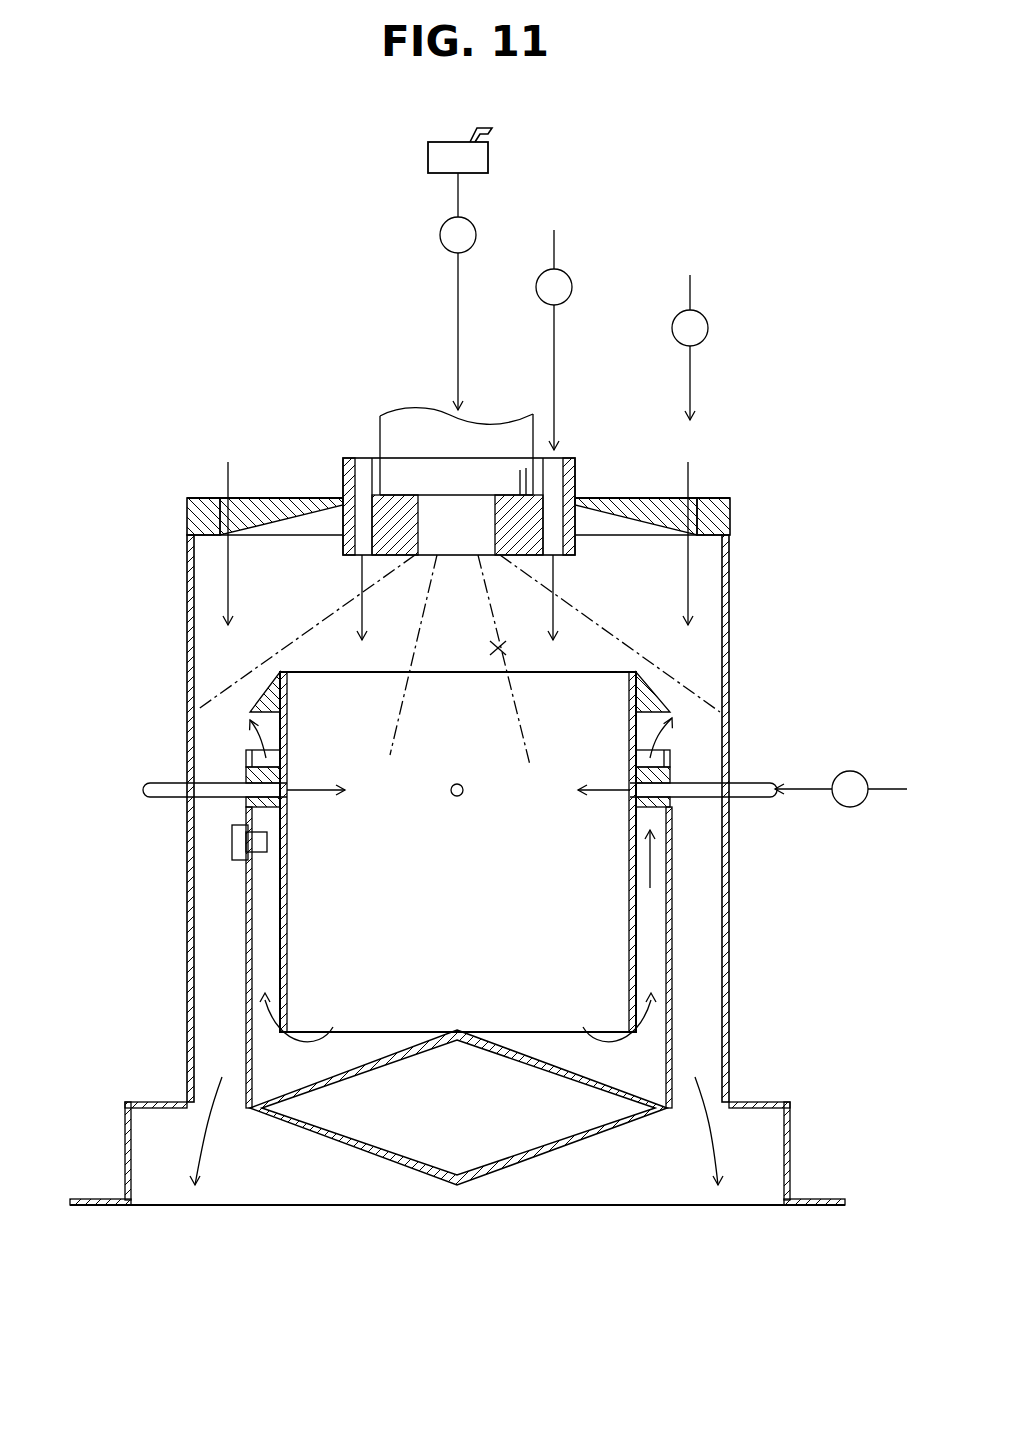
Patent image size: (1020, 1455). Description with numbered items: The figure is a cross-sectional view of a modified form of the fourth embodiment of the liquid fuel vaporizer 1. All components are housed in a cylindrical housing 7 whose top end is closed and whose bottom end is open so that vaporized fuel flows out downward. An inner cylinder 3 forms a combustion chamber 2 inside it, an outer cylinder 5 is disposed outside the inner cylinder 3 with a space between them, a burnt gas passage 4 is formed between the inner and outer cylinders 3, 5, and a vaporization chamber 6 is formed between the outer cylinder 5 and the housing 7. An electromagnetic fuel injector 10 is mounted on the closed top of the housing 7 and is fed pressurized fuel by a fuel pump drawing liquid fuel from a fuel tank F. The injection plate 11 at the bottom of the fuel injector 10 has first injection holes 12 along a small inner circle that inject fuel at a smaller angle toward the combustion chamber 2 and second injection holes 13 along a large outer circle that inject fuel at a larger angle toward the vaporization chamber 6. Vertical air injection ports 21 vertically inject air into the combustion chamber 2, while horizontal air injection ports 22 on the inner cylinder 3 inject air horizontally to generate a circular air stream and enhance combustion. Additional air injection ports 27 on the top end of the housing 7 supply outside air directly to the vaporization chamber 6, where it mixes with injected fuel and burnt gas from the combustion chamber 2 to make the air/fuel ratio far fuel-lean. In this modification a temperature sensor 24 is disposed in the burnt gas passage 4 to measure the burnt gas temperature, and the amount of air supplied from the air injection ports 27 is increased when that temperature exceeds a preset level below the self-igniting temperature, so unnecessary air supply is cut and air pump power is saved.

The liquid fuel vaporizer 1 is at (755, 538).
The combustion chamber 2 is at (470, 872).
The inner cylinder 3 is at (630, 865).
The burnt gas passage 4 is at (647, 922).
The outer cylinder 5 is at (670, 942).
The vaporization chamber 6 is at (700, 892).
The housing 7 is at (728, 850).
The electromagnetic fuel injector 10 is at (513, 448).
The injection plate 11 is at (495, 556).
The first injection holes 12 is at (465, 557).
The second injection holes 13 is at (423, 556).
The vertical air injection ports 21 is at (360, 522).
The horizontal air injection ports 22 is at (218, 783).
The temperature sensor 24 is at (252, 855).
The additional air injection ports 27 is at (452, 526).
The fuel tank F is at (488, 158).